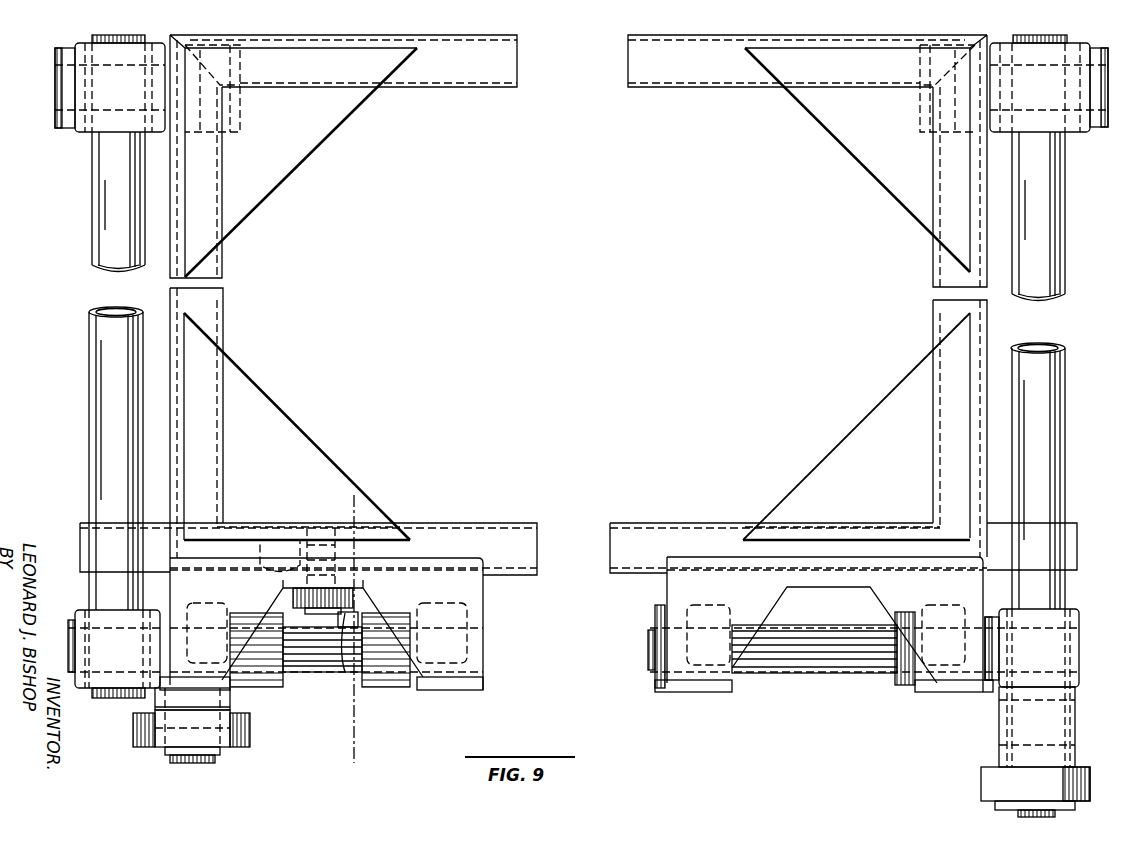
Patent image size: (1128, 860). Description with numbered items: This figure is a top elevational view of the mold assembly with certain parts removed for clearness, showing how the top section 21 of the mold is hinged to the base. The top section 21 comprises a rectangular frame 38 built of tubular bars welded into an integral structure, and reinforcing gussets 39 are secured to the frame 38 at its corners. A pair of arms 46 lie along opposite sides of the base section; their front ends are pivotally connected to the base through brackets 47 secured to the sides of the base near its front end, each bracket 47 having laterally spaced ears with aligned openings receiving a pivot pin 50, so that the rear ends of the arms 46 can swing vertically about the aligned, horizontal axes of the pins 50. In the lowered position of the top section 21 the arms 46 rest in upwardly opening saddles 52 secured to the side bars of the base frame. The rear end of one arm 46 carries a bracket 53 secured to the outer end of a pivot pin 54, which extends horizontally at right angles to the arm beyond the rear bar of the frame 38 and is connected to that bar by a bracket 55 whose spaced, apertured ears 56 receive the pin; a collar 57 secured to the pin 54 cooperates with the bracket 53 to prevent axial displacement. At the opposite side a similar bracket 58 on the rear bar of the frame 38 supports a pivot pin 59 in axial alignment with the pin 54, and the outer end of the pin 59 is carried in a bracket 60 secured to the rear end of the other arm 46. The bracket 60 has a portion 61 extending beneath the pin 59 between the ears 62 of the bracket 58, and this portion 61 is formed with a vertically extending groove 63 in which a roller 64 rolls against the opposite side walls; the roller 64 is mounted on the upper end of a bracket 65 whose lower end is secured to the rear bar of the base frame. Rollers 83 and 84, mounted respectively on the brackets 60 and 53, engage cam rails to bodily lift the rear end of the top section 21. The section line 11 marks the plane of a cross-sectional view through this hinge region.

The section line 11- 11 is at (345, 765).
The top section 21 is at (503, 522).
The rectangular frame 38 is at (712, 523).
The reinforcing gussets 39 is at (253, 192).
The arms 46 is at (108, 378).
The brackets 47 is at (83, 133).
The pivot pin 50 is at (55, 92).
The saddles 52 is at (78, 550).
The bracket 53 is at (1068, 714).
The pivot pin 54 is at (862, 660).
The bracket 55 is at (815, 580).
The ears 56 is at (700, 683).
The collar 57 is at (900, 683).
The bracket 58 is at (497, 598).
The pivot pin 59 is at (308, 668).
The bracket 60 is at (119, 688).
The portion 61 is at (388, 677).
The ears 62 is at (450, 690).
The groove 63 is at (345, 620).
The roller 64 is at (350, 590).
The bracket 65 is at (290, 522).
The roller 83 is at (248, 740).
The roller 84 is at (990, 782).